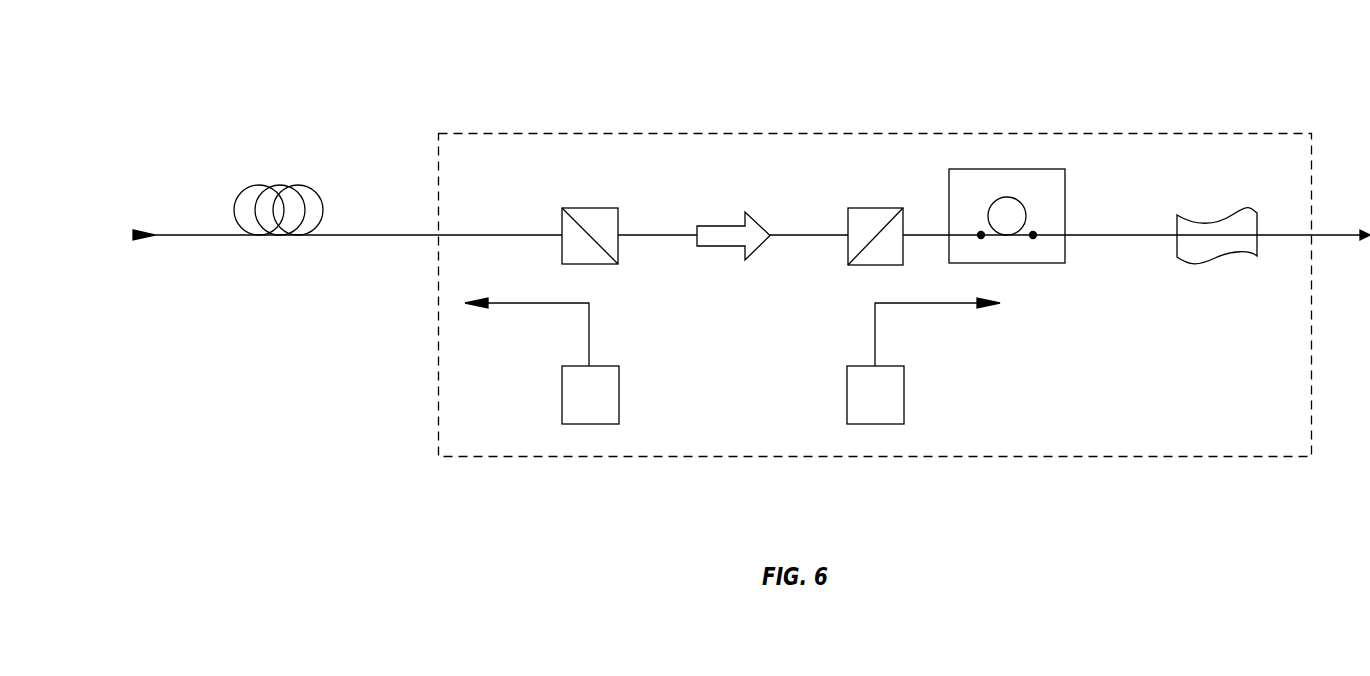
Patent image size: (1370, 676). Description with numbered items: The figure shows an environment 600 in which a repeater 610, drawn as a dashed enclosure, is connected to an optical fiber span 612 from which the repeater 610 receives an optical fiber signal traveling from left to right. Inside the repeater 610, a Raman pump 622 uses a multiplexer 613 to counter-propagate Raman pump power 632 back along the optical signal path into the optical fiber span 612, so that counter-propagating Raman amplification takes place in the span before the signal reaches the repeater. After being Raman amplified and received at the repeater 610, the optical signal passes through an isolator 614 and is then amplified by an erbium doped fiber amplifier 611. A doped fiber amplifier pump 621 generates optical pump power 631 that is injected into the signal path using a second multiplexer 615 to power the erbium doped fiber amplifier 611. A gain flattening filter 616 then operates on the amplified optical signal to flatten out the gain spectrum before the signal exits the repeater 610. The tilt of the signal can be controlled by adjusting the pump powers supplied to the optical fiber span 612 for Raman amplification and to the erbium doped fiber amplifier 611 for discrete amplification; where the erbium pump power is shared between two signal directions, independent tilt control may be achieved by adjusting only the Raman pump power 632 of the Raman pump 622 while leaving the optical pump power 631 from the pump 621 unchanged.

The environment 600 is at (810, 40).
The repeater 610 is at (1208, 133).
The erbium doped fiber amplifier 611 is at (1065, 183).
The optical fiber span 612 is at (217, 236).
The multiplexer 613 is at (590, 208).
The isolator 614 is at (722, 226).
The multiplexer 615 is at (872, 208).
The gain flattening filter 616 is at (1237, 208).
The doped fiber amplifier pump 621 is at (847, 385).
The Raman pump 622 is at (619, 383).
The optical pump power 631 is at (875, 320).
The Raman pump power 632 is at (589, 318).